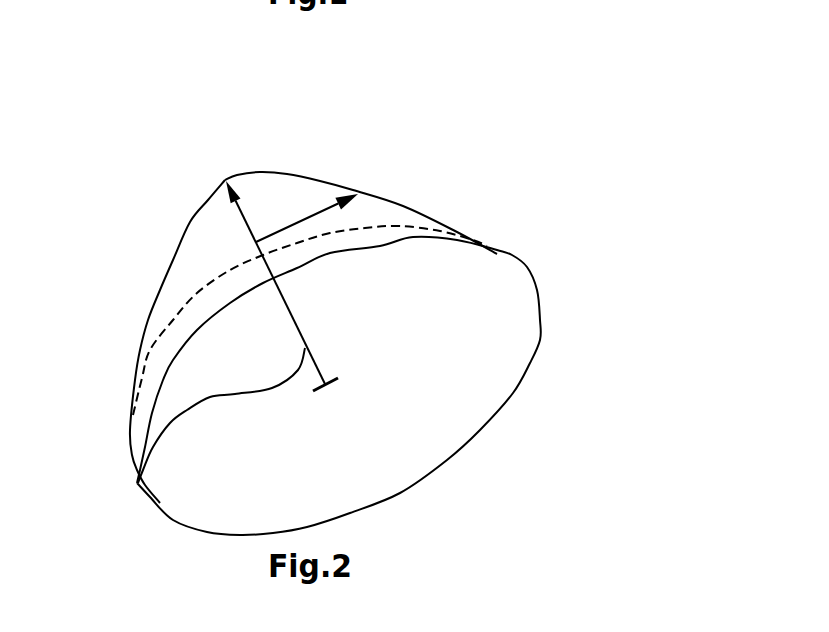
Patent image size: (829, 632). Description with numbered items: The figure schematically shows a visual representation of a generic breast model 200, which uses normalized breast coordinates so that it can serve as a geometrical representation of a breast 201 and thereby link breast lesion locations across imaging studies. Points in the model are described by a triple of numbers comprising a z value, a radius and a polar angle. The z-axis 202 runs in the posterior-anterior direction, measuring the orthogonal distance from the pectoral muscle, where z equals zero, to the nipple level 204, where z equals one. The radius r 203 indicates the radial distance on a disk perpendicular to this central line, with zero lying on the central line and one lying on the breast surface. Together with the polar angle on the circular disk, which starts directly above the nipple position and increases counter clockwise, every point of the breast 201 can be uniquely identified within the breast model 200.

The breast model 200 is at (356, 267).
The breast 201 is at (463, 333).
The z-axis 202 is at (139, 478).
The radius r 203 is at (326, 207).
The nipple level 204 is at (246, 172).